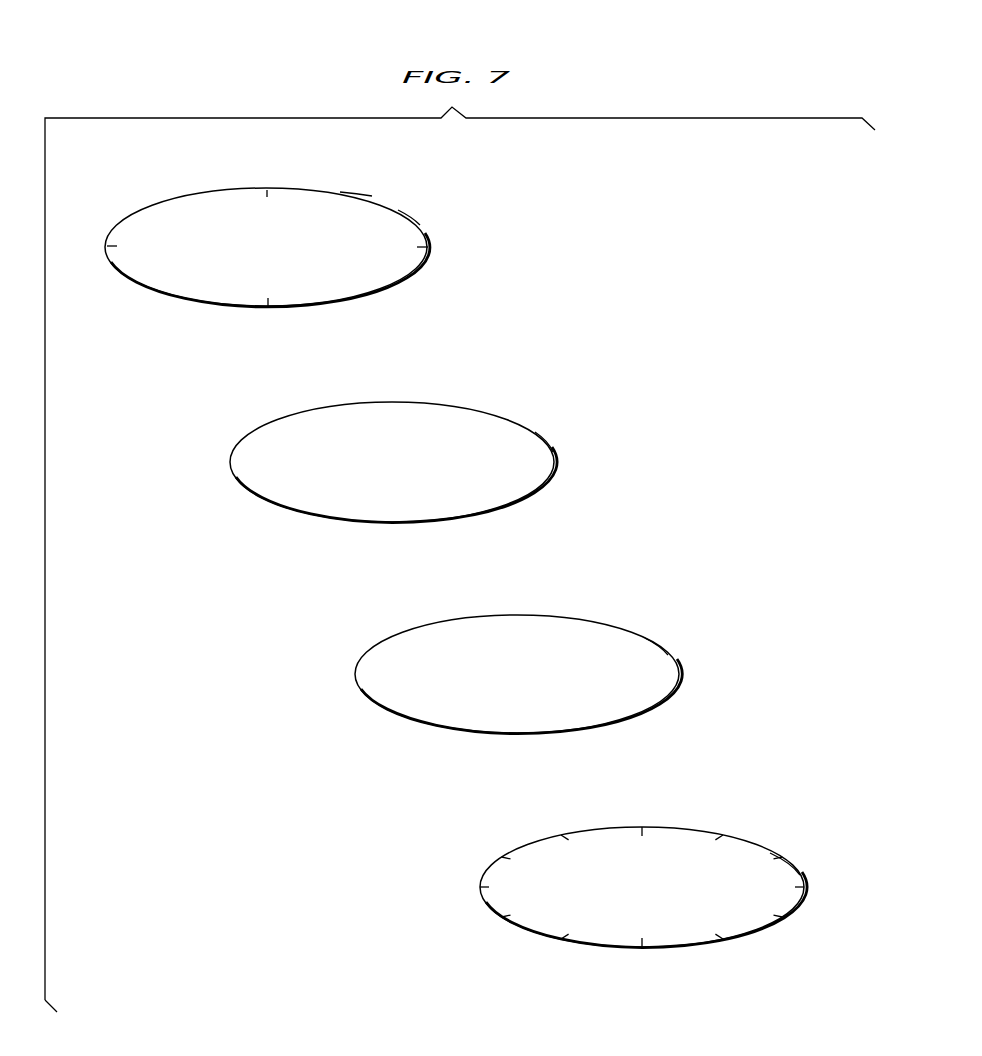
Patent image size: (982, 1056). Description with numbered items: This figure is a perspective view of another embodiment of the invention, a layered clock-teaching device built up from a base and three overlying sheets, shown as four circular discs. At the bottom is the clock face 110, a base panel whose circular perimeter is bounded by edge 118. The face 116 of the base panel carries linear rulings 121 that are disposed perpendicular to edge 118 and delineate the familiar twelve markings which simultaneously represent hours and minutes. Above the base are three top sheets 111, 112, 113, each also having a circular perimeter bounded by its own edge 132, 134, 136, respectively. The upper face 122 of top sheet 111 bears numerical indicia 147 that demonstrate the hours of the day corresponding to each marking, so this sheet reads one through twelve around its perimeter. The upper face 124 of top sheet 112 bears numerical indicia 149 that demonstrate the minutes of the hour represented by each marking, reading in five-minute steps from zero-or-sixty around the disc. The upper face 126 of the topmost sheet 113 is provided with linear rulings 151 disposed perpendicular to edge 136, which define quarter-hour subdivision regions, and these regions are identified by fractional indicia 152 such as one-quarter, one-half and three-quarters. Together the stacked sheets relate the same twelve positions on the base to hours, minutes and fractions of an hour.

The clock face 110 is at (677, 835).
The face 116 is at (791, 897).
The edge 118 is at (795, 863).
The linear rulings 121 is at (561, 937).
The upper face 122 is at (645, 697).
The top sheet 111 is at (548, 622).
The edge 132 is at (658, 643).
The numerical indicia 147 is at (396, 650).
The upper face 124 is at (265, 477).
The top sheet 112 is at (430, 416).
The edge 134 is at (545, 437).
The numerical indicia 149 is at (316, 410).
The upper face 126 is at (178, 288).
The top sheet 113 is at (352, 205).
The edge 136 is at (410, 217).
The linear rulings 151 is at (267, 191).
The fractional indicia 152 is at (288, 191).